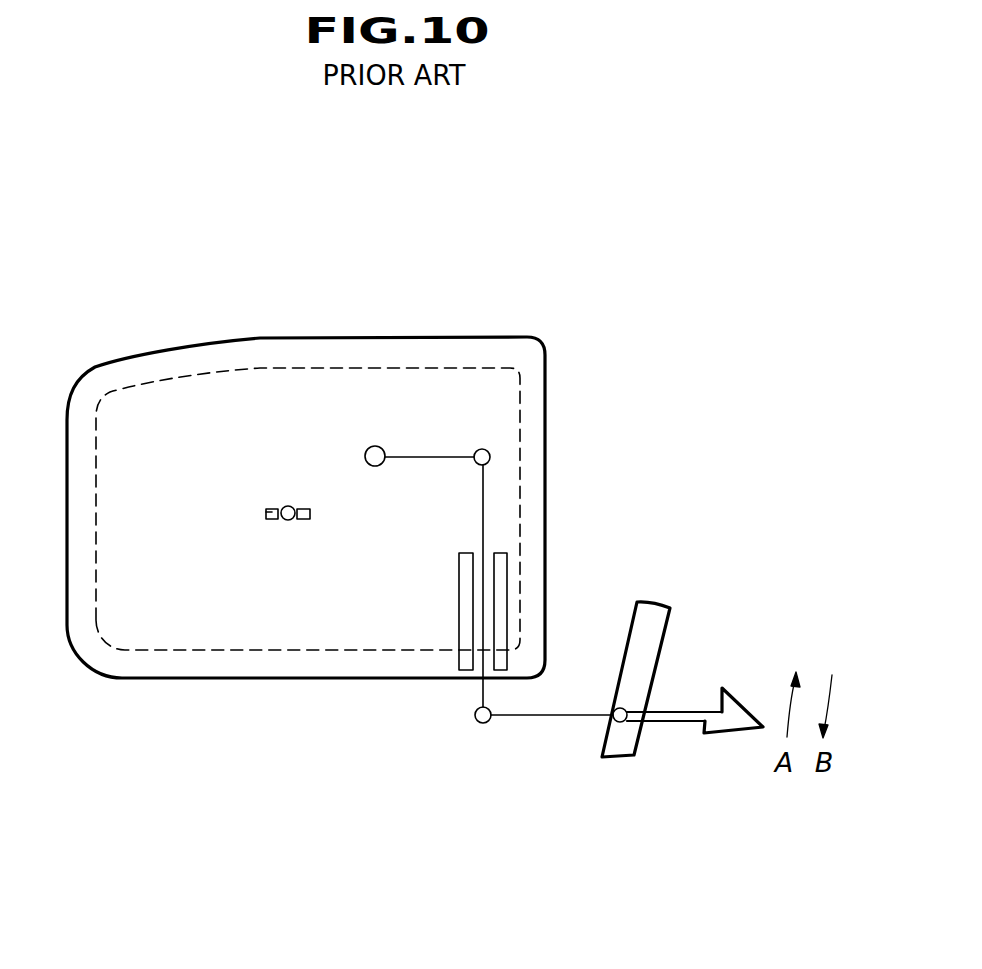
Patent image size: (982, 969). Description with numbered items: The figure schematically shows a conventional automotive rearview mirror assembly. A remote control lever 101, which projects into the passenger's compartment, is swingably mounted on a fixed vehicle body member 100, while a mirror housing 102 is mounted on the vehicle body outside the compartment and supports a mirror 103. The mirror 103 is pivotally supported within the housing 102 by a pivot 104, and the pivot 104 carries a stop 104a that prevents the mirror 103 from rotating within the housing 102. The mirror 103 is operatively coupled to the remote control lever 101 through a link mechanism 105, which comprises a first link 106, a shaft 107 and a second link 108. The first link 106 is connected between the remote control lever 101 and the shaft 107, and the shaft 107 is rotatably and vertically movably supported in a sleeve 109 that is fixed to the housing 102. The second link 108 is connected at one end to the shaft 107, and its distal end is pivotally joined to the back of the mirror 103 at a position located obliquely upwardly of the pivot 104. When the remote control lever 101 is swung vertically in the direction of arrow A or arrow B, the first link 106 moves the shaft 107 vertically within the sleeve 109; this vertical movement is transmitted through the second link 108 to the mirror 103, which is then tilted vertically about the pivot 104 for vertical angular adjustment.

The fixed vehicle body member 100 is at (625, 642).
The remote control lever 101 is at (678, 708).
The mirror housing 102 is at (343, 337).
The mirror 103 is at (209, 372).
The pivot 104 is at (288, 523).
The stop 104a is at (272, 523).
The link mechanism 105 is at (511, 724).
The first link 106 is at (568, 722).
The shaft 107 is at (482, 537).
The second link 108 is at (452, 455).
The sleeve 109 is at (462, 625).